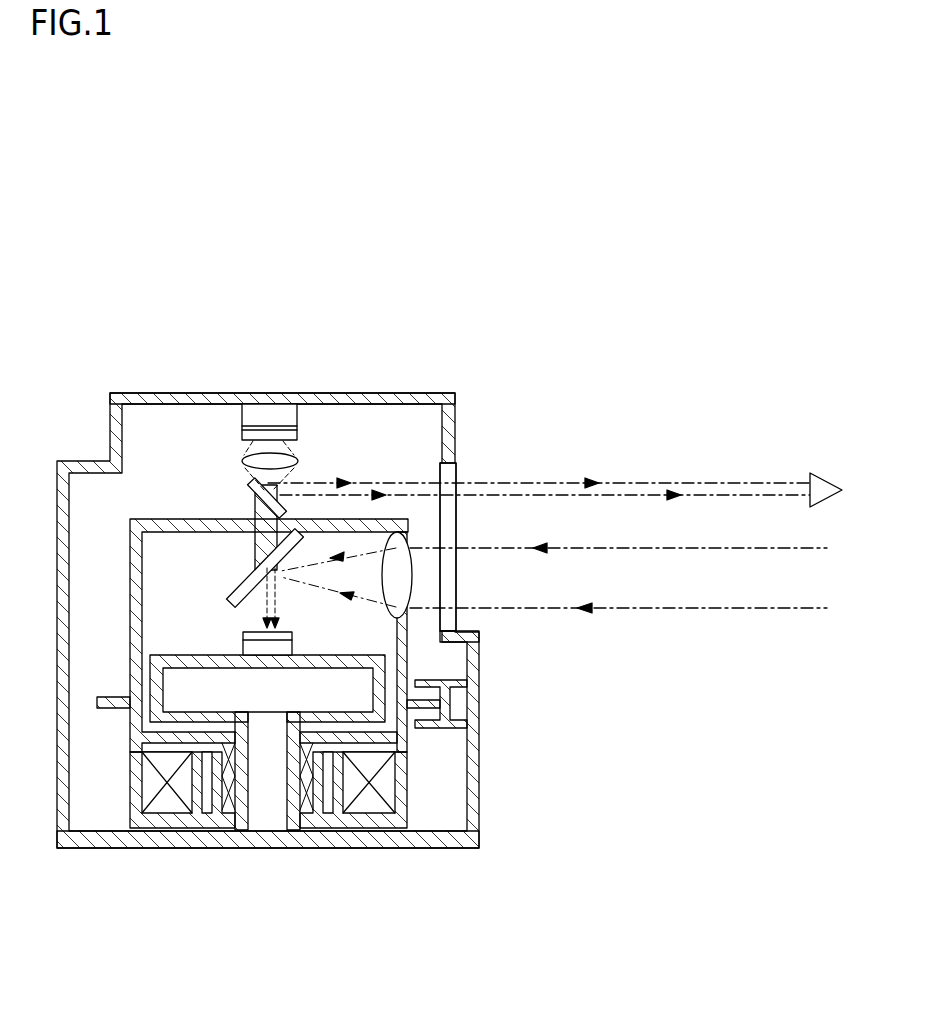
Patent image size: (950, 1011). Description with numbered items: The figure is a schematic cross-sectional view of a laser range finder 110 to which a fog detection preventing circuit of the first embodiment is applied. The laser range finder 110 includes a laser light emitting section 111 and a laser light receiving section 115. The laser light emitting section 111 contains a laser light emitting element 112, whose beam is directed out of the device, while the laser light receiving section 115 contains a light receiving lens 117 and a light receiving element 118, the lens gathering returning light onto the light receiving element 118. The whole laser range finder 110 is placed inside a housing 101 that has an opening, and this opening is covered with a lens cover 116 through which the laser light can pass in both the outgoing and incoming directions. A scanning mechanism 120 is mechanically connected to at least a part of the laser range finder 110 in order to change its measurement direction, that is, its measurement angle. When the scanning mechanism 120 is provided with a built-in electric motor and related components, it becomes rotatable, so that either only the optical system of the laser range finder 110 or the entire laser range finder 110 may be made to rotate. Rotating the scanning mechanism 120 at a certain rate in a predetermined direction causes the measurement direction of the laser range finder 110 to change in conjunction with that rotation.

The housing 101 is at (335, 392).
The laser range finder 110 is at (424, 392).
The laser light emitting section 111 is at (473, 472).
The laser light emitting element 112 is at (242, 414).
The laser light receiving section 115 is at (477, 618).
The lens cover 116 is at (454, 578).
The light receiving lens 117 is at (396, 619).
The light receiving element 118 is at (243, 646).
The scanning mechanism 120 is at (292, 862).